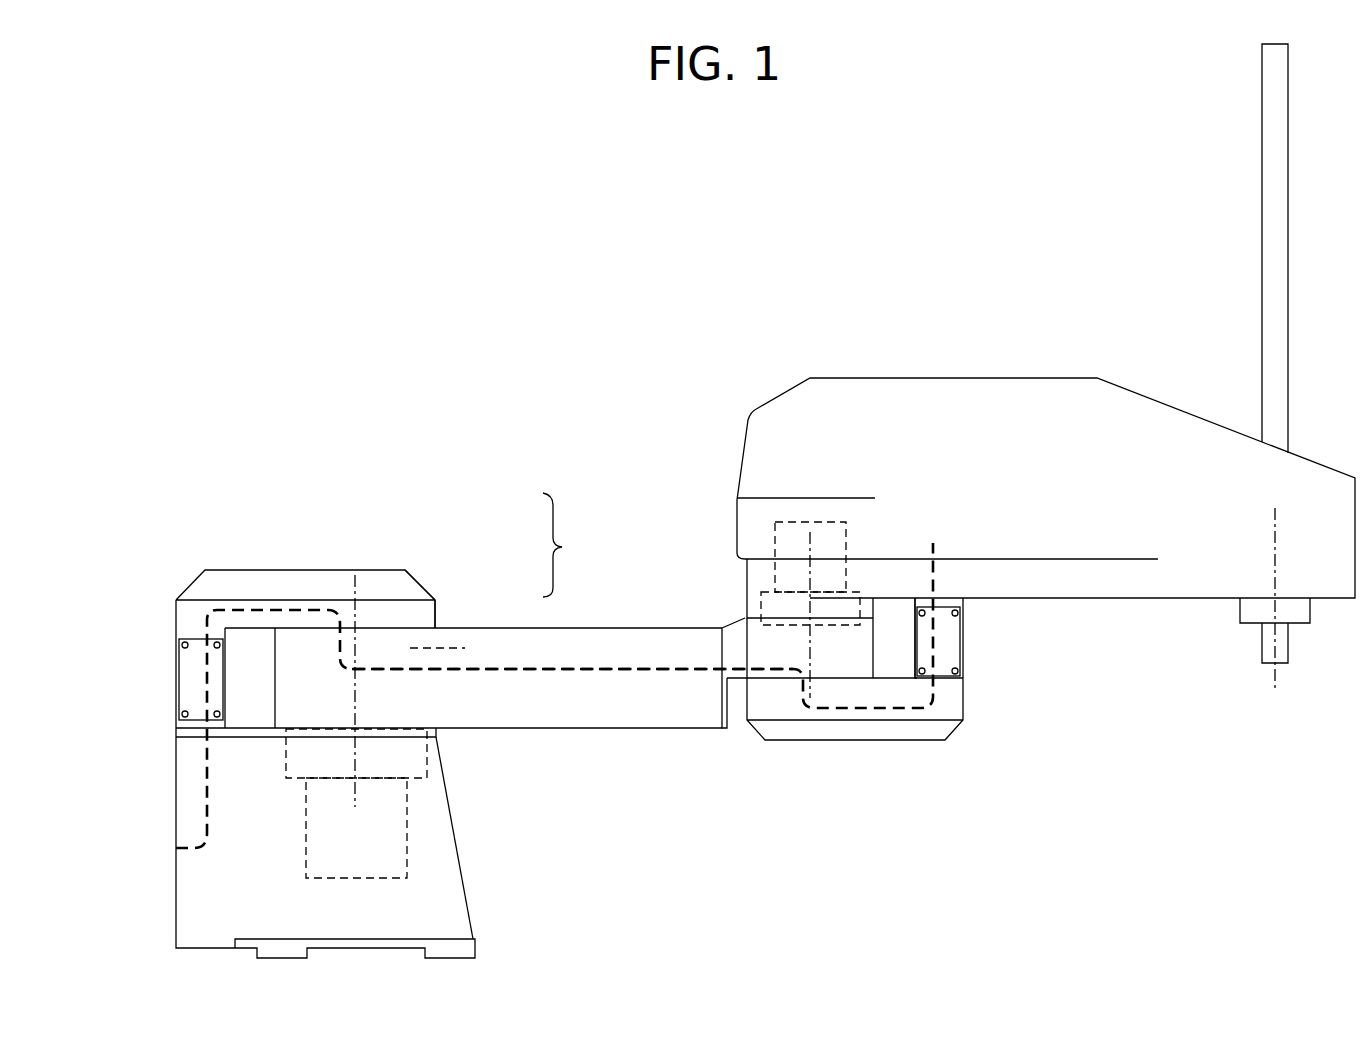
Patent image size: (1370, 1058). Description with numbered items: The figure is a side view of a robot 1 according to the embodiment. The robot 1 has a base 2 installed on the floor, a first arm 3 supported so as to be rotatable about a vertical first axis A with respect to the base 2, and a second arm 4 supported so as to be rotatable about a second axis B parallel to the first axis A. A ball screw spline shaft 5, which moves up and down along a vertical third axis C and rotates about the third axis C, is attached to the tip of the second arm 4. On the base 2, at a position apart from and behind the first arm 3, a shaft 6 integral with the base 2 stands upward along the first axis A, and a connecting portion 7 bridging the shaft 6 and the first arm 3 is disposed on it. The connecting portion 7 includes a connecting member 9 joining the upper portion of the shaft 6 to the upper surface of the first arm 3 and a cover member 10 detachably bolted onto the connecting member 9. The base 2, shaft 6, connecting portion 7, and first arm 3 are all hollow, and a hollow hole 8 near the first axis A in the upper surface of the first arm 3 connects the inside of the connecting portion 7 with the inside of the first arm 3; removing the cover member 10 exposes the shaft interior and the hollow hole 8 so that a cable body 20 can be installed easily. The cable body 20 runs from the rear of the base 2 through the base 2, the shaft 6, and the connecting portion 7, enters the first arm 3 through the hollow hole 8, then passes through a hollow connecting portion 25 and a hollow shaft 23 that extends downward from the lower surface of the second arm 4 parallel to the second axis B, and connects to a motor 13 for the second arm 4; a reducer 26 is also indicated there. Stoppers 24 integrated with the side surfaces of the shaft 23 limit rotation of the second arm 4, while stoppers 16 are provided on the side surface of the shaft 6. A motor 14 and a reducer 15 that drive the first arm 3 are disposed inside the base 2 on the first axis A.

The robot 1 is at (335, 282).
The base 2 is at (472, 918).
The first arm 3 is at (643, 730).
The second arm 4 is at (938, 378).
The ball screw spline shaft 5 is at (1262, 113).
The shaft 6 is at (176, 660).
The connecting portion 7 is at (564, 545).
The hollow hole 8 is at (408, 630).
The connecting member 9 is at (437, 616).
The cover member 10 is at (410, 572).
The motor 13 is at (775, 536).
The motor 14 is at (407, 836).
The reducer 15 is at (427, 763).
The stoppers 16 is at (190, 690).
The cable body 20 is at (583, 670).
The hollow shaft 23 is at (964, 628).
The stoppers 24 is at (947, 652).
The hollow connecting portion 25 is at (960, 734).
The reducer 26 is at (761, 600).
The first axis A is at (355, 590).
The second axis B is at (808, 645).
The third axis C is at (1277, 680).